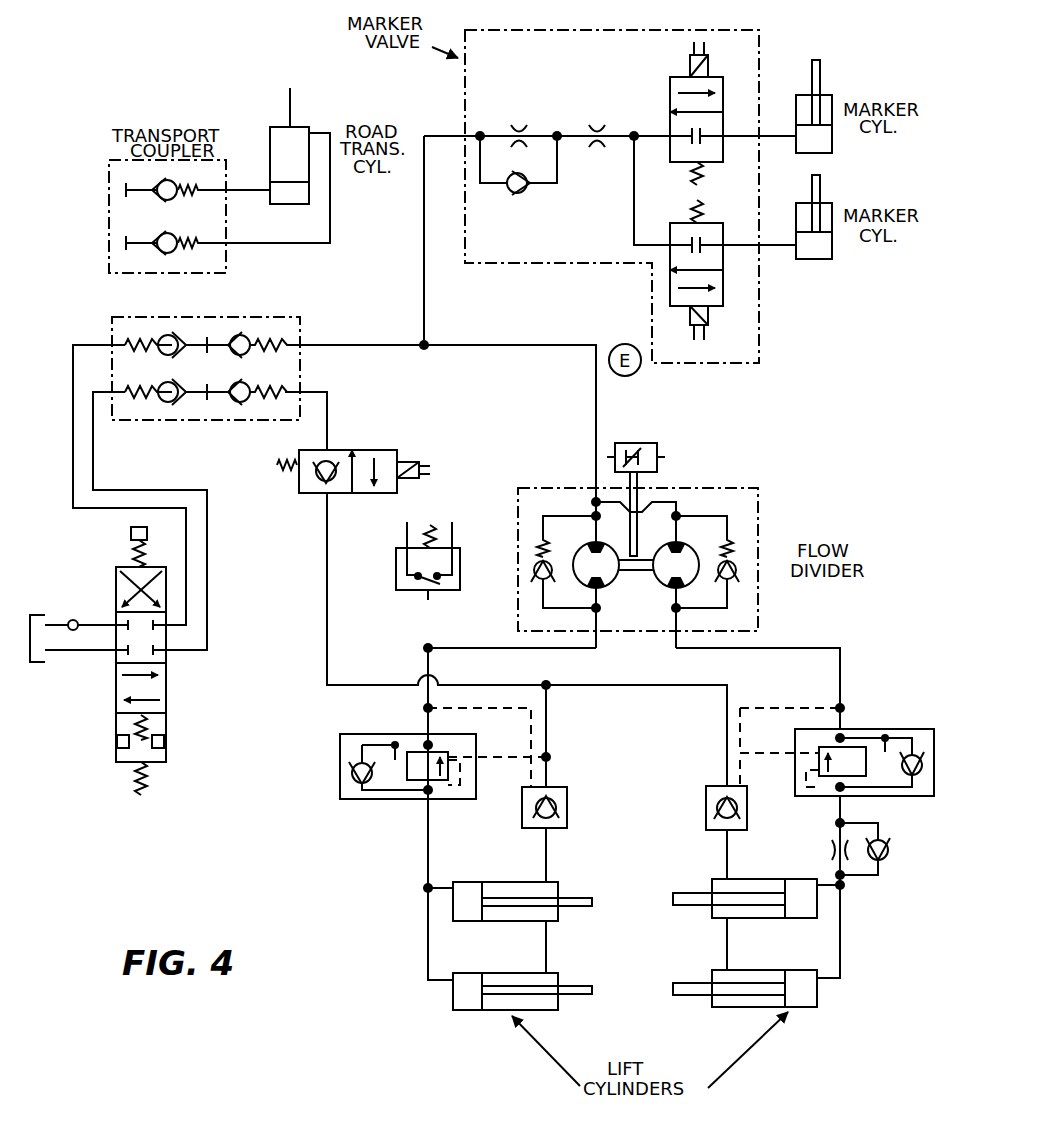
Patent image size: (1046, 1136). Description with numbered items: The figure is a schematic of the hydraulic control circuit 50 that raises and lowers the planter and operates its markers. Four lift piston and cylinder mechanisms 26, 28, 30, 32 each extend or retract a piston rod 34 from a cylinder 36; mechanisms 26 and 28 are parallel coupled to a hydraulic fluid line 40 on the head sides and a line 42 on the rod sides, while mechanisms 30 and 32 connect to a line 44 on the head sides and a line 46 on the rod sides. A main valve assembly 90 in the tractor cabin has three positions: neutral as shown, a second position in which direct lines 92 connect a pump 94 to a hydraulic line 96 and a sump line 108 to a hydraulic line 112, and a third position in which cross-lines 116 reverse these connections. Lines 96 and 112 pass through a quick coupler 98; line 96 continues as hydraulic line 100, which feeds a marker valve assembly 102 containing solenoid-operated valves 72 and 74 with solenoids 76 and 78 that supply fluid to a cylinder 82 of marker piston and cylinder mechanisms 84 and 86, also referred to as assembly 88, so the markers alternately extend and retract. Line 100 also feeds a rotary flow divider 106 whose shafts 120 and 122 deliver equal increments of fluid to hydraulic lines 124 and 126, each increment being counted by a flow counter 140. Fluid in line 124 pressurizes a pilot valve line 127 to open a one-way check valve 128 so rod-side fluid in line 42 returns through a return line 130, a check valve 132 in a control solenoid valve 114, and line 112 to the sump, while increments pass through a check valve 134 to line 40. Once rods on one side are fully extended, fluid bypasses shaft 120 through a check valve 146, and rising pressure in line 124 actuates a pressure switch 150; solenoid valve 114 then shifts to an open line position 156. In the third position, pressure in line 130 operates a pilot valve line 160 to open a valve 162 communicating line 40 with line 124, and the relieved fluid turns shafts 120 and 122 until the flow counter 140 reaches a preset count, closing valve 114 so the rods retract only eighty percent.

The piston and cylinder mechanism 26 is at (466, 1014).
The piston and cylinder mechanism 28 is at (475, 923).
The piston and cylinder mechanism 30 is at (800, 918).
The piston and cylinder mechanism 32 is at (822, 1001).
The piston rod 34 is at (586, 898).
The cylinder 36 is at (536, 973).
The hydraulic fluid line 40 is at (428, 852).
The hydraulic fluid line 42 is at (546, 845).
The hydraulic fluid line 44 is at (842, 898).
The hydraulic fluid line 46 is at (727, 866).
The hydraulic control circuit 50 is at (360, 784).
The solenoid-operated valve 72 is at (723, 290).
The solenoid-operated valve 74 is at (670, 103).
The solenoid 76 is at (708, 322).
The solenoid 78 is at (690, 58).
The cylinder 82 is at (832, 250).
The marker piston and cylinder mechanism 84 is at (832, 145).
The marker piston and cylinder mechanism 86 is at (836, 200).
The marker piston and cylinder assembly 88 is at (838, 88).
The main valve assembly 90 is at (118, 772).
The direct lines 92 is at (166, 688).
The pump 94 is at (73, 620).
The hydraulic line 96 is at (73, 478).
The quick coupler 98 is at (222, 316).
The hydraulic line 100 is at (494, 346).
The marker valve assembly 102 is at (634, 30).
The rotary flow divider 106 is at (426, 297).
The sump line 108 is at (92, 660).
The hydraulic line 112 is at (207, 550).
The control solenoid valve 114 is at (352, 450).
The cross-lines 116 is at (118, 595).
The shaft 120 is at (585, 548).
The shaft 122 is at (692, 548).
The hydraulic line 124 is at (500, 648).
The hydraulic line 126 is at (815, 648).
The pilot valve line 127 is at (531, 708).
The one-way check valve 128 is at (567, 805).
The return line 130 is at (326, 656).
The check valve 132 is at (310, 482).
The check valve 134 is at (355, 800).
The flow counter 140 is at (657, 450).
The check valve 146 is at (534, 565).
The pressure switch 150 is at (396, 575).
The open line position 156 is at (405, 462).
The pilot valve line 160 is at (531, 762).
The valve 162 is at (420, 796).